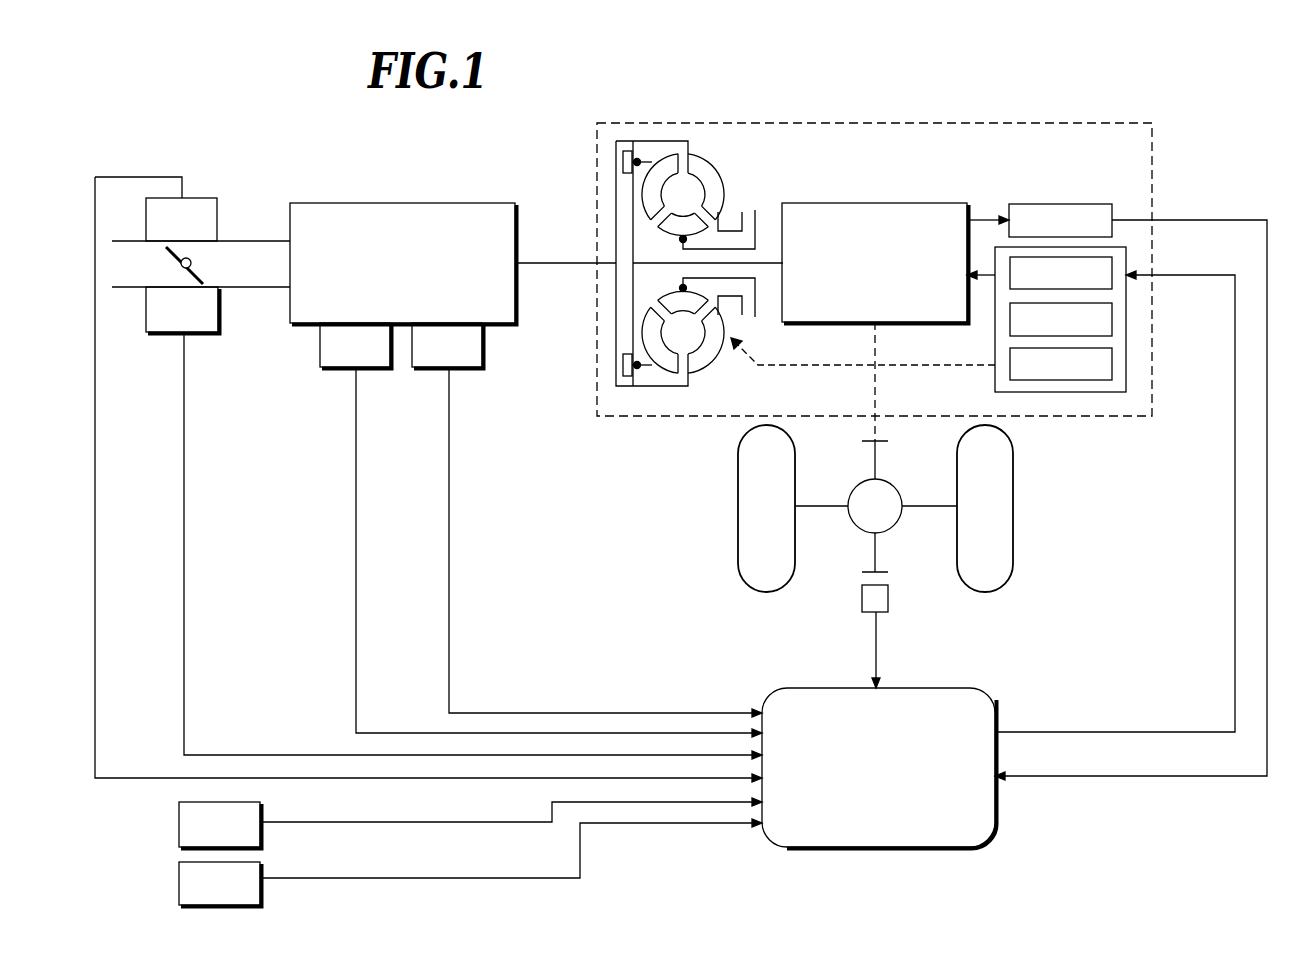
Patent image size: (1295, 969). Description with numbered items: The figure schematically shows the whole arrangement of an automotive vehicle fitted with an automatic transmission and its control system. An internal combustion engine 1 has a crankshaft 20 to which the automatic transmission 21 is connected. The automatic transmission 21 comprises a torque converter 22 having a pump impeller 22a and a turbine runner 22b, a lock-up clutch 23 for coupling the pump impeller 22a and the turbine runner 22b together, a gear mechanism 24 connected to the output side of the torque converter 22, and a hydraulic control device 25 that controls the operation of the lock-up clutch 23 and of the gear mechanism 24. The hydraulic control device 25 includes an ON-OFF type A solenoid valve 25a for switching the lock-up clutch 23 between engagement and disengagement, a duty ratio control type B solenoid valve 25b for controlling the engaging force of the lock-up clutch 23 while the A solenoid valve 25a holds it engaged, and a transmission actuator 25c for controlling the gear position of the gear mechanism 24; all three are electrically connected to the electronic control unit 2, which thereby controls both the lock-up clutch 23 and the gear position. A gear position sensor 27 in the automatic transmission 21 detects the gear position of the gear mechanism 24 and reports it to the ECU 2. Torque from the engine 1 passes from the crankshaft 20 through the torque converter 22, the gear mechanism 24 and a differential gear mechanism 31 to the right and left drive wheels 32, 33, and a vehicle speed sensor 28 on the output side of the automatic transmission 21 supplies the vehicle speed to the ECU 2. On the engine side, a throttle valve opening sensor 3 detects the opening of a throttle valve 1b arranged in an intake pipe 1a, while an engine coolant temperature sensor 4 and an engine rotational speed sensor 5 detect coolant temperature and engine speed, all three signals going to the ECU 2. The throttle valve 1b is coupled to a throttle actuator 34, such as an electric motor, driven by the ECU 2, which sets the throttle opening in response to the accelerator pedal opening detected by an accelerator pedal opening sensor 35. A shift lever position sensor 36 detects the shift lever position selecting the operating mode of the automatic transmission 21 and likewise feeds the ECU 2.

The internal combustion engine 1 is at (368, 203).
The intake pipe 1a is at (245, 241).
The throttle valve 1b is at (170, 260).
The electronic control unit 2 is at (795, 688).
The throttle valve opening sensor 3 is at (200, 333).
The engine coolant temperature sensor 4 is at (338, 367).
The engine rotational speed sensor 5 is at (432, 367).
The crankshaft 20 is at (563, 262).
The automatic transmission 21 is at (866, 122).
The torque converter 22 is at (713, 227).
The pump impeller 22a is at (725, 195).
The turbine runner 22b is at (668, 155).
The lock-up clutch 23 is at (637, 158).
The gear mechanism 24 is at (913, 203).
The hydraulic control device 25 is at (983, 484).
The A solenoid valve 25a is at (1112, 318).
The B solenoid valve 25b is at (1112, 366).
The transmission actuator 25c is at (1112, 266).
The gear position sensor 27 is at (1068, 204).
The vehicle speed sensor 28 is at (888, 590).
The differential gear mechanism 31 is at (897, 483).
The drive wheel 32 is at (738, 548).
The drive wheel 33 is at (1012, 548).
The throttle actuator 34 is at (197, 198).
The accelerator pedal opening sensor 35 is at (178, 883).
The shift lever position sensor 36 is at (178, 833).